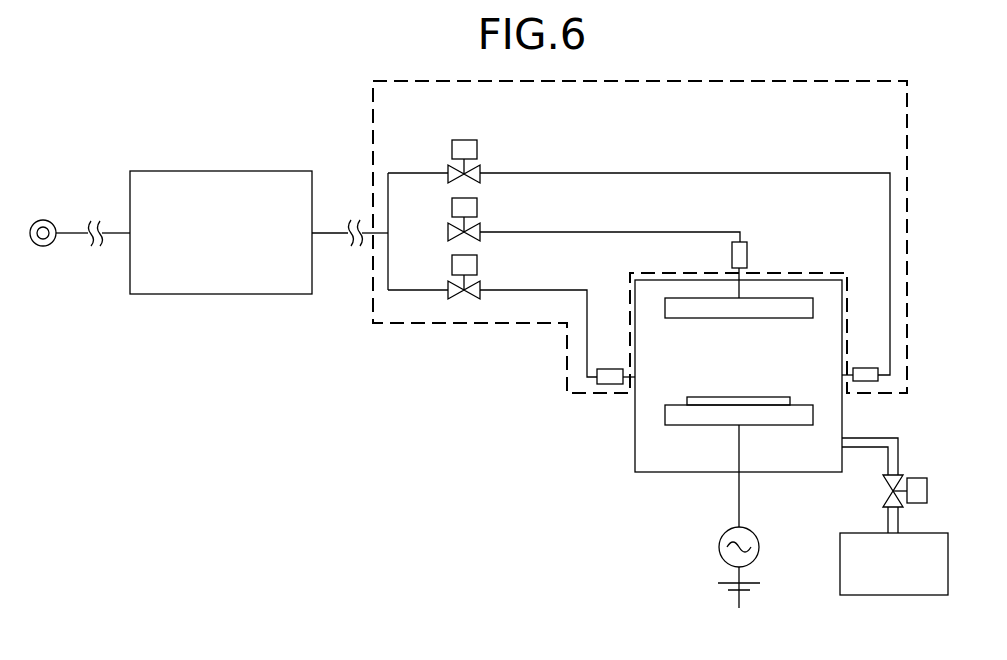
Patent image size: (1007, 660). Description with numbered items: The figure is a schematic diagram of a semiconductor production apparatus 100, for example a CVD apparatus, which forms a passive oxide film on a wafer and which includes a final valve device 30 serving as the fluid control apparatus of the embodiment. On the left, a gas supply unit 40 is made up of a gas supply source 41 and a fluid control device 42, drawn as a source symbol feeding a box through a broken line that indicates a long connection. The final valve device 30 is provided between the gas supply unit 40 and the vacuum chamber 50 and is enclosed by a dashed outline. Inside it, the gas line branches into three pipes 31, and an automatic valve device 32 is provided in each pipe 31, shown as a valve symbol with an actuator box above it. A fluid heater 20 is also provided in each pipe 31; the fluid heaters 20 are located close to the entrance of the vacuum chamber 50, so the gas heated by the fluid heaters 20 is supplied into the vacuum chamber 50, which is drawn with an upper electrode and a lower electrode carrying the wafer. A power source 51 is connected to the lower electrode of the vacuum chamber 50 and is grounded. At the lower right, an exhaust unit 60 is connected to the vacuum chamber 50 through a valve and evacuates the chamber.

The semiconductor production apparatus 100 is at (172, 122).
The gas supply unit 40 is at (140, 318).
The gas supply source 41 is at (43, 247).
The fluid control device 42 is at (220, 295).
The final valve device 30 is at (408, 324).
The pipe 31 is at (613, 172).
The automatic valve device 32 is at (466, 140).
The fluid heater 20 is at (610, 384).
The vacuum chamber 50 is at (650, 473).
The RF power source 51 is at (718, 554).
The exhaust unit 60 is at (848, 527).